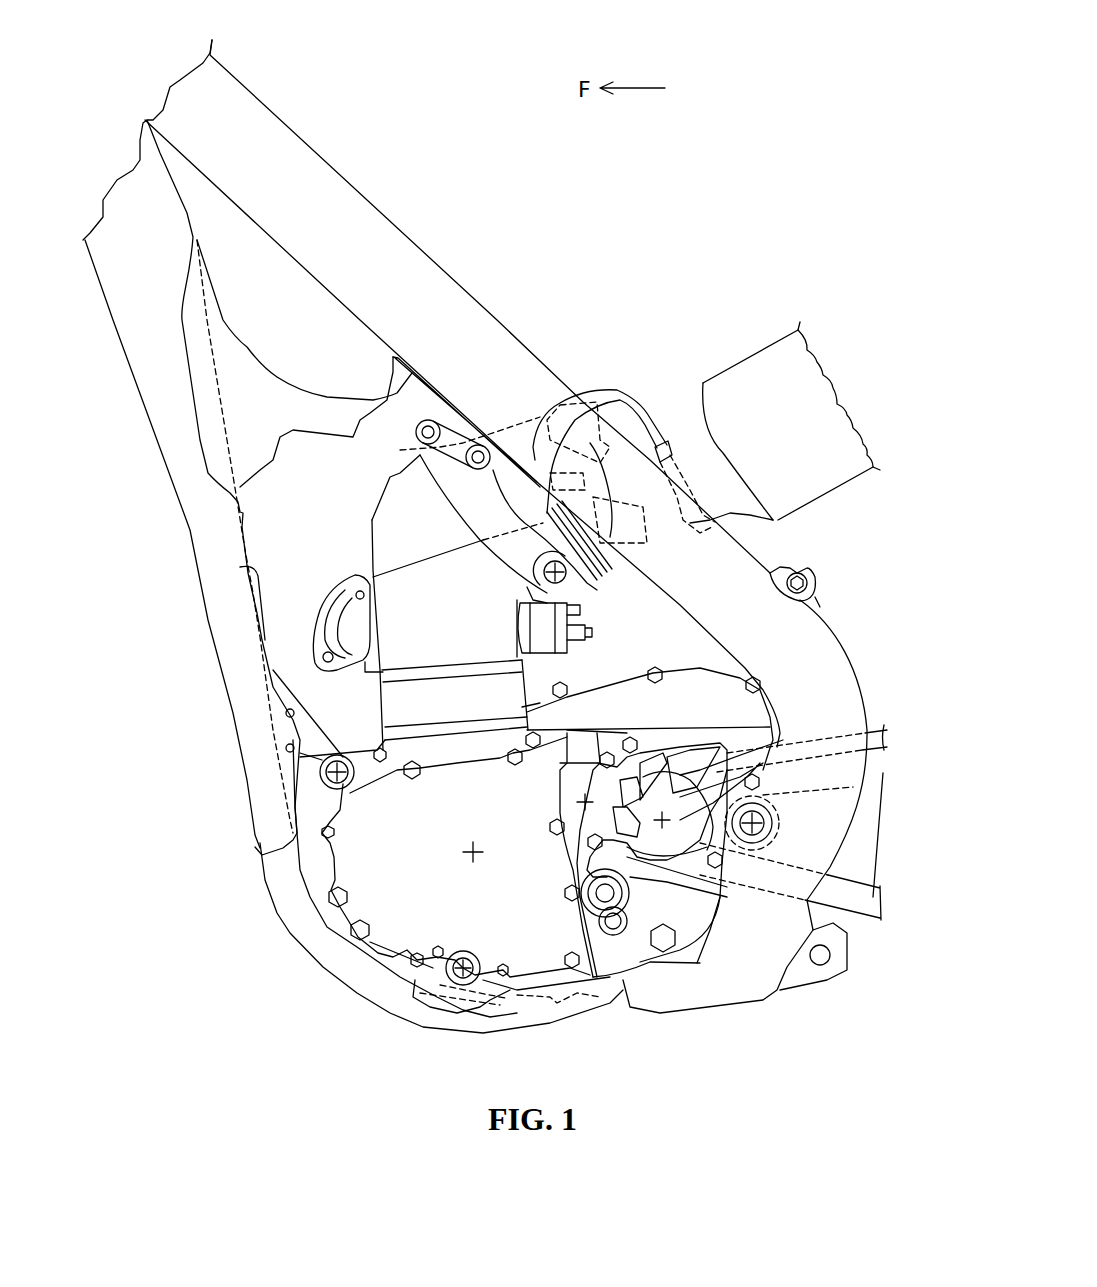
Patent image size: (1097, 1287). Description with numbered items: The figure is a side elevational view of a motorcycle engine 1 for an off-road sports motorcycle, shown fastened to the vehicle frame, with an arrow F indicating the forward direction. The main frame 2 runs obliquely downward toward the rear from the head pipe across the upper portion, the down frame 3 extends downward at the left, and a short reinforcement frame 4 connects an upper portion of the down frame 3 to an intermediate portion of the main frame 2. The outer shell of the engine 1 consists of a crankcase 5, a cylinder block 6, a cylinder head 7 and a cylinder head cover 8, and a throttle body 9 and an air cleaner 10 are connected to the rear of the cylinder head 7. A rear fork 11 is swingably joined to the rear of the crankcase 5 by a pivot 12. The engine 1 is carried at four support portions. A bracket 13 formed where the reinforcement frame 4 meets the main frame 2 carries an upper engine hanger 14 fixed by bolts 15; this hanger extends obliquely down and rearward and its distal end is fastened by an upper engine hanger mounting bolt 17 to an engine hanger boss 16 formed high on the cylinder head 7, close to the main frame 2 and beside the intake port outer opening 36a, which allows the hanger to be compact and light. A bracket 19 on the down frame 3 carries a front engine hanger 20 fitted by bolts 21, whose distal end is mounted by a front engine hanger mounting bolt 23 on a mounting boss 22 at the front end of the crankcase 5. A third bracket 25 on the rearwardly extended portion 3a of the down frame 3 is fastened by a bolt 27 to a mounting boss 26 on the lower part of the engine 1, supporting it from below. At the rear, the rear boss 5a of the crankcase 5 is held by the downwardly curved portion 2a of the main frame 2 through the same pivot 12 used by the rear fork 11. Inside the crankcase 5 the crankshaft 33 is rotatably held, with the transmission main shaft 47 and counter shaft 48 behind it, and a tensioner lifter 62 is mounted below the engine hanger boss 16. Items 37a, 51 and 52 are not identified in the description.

The engine 1 is at (294, 481).
The main frame 2 is at (258, 110).
The downwardly curved portion 2a is at (790, 883).
The down frame 3 is at (188, 480).
The rearwardly extended portion 3a is at (567, 1003).
The reinforcement frame 4 is at (290, 398).
The crankcase 5 is at (367, 858).
The rear boss 5a is at (783, 740).
The cylinder block 6 is at (417, 705).
The cylinder head 7 is at (417, 638).
The cylinder head cover 8 is at (402, 533).
The throttle body 9 is at (610, 557).
The air cleaner 10 is at (760, 365).
The rear fork 11 is at (860, 837).
The pivot 12 is at (750, 822).
The bracket 13 is at (417, 402).
The upper engine hanger 14 is at (547, 515).
The bolts 15 is at (480, 447).
The engine hanger boss 16 is at (583, 587).
The upper engine hanger mounting bolt 17 is at (547, 527).
The bracket 19 is at (252, 695).
The front engine hanger 20 is at (320, 755).
The bolts 21 is at (290, 748).
The mounting boss 22 is at (340, 795).
The front engine hanger mounting bolt 23 is at (323, 778).
The third bracket 25 is at (470, 1003).
The mounting boss 26 is at (423, 967).
The bolt 27 is at (441, 954).
The crankshaft 33 is at (473, 852).
The intake port outer opening 36a is at (600, 576).
The mounting boss 37a is at (318, 617).
The main shaft 47 is at (595, 980).
The counter shaft 48 is at (655, 920).
The rib plate 51 is at (703, 840).
The bracket 52 is at (858, 923).
The tensioner lifter 62 is at (587, 630).